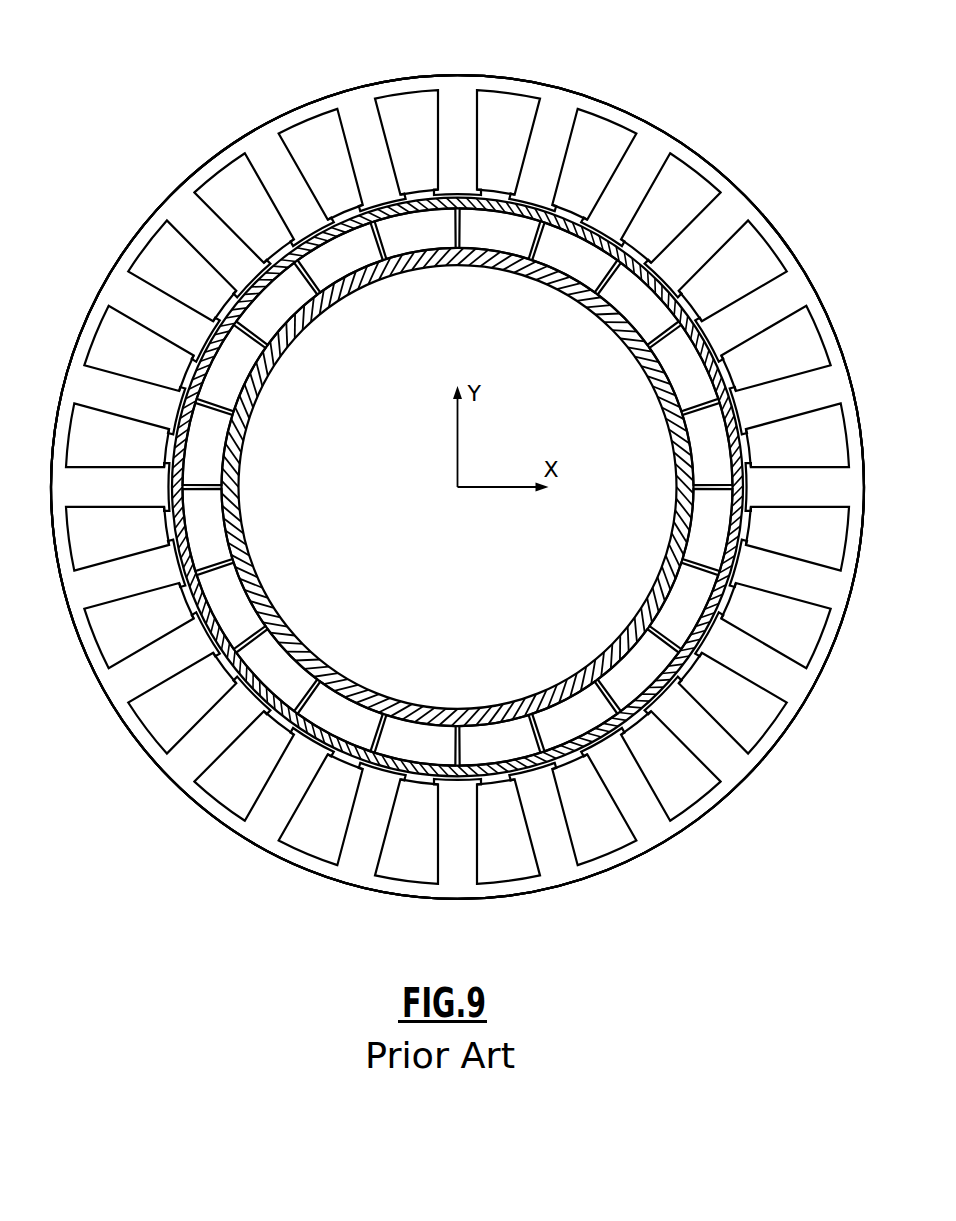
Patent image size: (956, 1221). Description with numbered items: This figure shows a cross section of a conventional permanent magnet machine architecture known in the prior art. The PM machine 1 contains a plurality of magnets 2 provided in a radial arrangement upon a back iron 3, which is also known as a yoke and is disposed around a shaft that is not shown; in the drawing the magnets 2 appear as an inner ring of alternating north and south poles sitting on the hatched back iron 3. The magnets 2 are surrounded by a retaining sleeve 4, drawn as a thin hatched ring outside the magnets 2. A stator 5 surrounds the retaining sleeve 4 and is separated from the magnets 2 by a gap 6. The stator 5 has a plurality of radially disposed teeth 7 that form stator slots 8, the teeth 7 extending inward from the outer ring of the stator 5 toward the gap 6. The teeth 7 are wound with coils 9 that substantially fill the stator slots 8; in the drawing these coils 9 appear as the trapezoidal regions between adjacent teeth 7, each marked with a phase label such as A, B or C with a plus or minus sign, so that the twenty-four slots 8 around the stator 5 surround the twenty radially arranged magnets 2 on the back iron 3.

The PM machine 1 is at (145, 89).
The magnets 2 is at (688, 437).
The back iron 3 is at (242, 437).
The retaining sleeve 4 is at (734, 403).
The stator 5 is at (611, 104).
The gap 6 is at (747, 481).
The teeth 7 is at (781, 680).
The stator slots 8 is at (778, 226).
The coils 9 is at (750, 722).